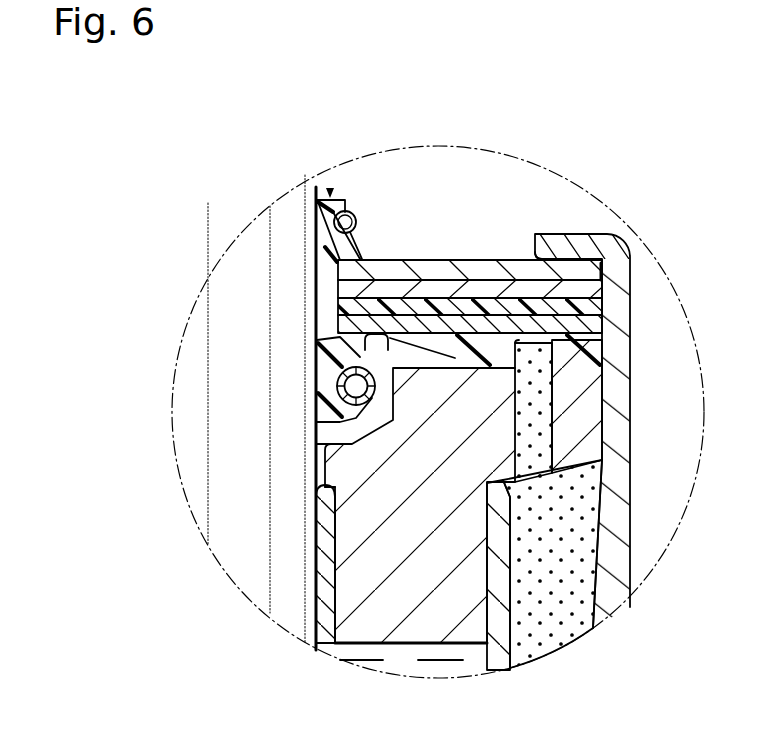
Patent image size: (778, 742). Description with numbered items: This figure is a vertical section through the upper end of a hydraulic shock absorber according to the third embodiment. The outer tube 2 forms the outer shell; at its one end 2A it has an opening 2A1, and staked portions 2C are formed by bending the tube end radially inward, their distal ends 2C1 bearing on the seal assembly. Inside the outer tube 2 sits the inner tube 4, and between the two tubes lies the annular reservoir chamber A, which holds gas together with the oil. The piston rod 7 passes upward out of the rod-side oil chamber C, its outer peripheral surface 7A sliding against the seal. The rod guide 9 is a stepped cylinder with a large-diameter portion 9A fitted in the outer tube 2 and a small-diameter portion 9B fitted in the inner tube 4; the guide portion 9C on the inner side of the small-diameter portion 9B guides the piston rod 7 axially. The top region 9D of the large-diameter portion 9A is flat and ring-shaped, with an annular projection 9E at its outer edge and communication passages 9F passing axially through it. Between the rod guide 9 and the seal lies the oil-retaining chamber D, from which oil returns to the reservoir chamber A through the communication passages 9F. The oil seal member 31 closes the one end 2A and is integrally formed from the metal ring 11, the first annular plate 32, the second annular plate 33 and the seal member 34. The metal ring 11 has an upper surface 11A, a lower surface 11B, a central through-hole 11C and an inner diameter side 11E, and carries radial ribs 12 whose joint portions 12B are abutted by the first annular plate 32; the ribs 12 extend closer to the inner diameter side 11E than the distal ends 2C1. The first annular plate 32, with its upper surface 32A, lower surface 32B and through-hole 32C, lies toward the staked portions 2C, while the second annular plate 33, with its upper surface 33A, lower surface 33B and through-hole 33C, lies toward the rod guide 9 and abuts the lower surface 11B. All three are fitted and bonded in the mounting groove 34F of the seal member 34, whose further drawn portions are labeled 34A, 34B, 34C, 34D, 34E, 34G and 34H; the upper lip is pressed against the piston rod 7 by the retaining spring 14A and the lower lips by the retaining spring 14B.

The outer tube 2 is at (612, 517).
The one end 2A is at (615, 275).
The opening 2A1 is at (527, 258).
The staked portions 2C is at (587, 263).
The distal ends 2C1 is at (545, 259).
The inner tube 4 is at (505, 627).
The piston rod 7 is at (253, 473).
The outer peripheral surface 7A is at (316, 448).
The rod guide 9 is at (398, 527).
The large-diameter portion 9A is at (580, 432).
The small-diameter portion 9B is at (407, 610).
The guide portion 9C is at (322, 566).
The top region 9D is at (540, 437).
The annular projection 9E is at (555, 367).
The communication passages 9F is at (604, 461).
The metal ring 11 is at (612, 266).
The upper surface 11A is at (338, 288).
The lower surface 11B is at (338, 324).
The through-hole 11C is at (338, 306).
The inner diameter side 11E is at (340, 282).
The ribs 12 is at (428, 290).
The joint portions 12B is at (480, 290).
The retaining spring 14A is at (350, 211).
The retaining spring 14B is at (337, 384).
The oil seal member 31 is at (330, 190).
The first annular plate 32 is at (600, 270).
The upper surface 32A is at (420, 260).
The lower surface 32B is at (560, 290).
The through-hole 32C is at (345, 266).
The second annular plate 33 is at (566, 318).
The upper surface 33A is at (578, 308).
The lower surface 33B is at (575, 347).
The through-hole 33C is at (338, 332).
The seal member 34 is at (366, 250).
The upper seal lip 34A is at (324, 212).
The lower seal upper lip 34B is at (330, 356).
The lower seal lower lip 34C is at (330, 404).
The seal member top layer 34D is at (457, 260).
The seal member intermediate layer 34E is at (508, 330).
The mounting groove 34F is at (407, 260).
The seal member lower projection 34G is at (563, 362).
The seal member lower surface 34H is at (605, 336).
The reservoir chamber A is at (556, 622).
The rod-side oil chamber C is at (458, 672).
The oil-retaining chamber D is at (363, 428).